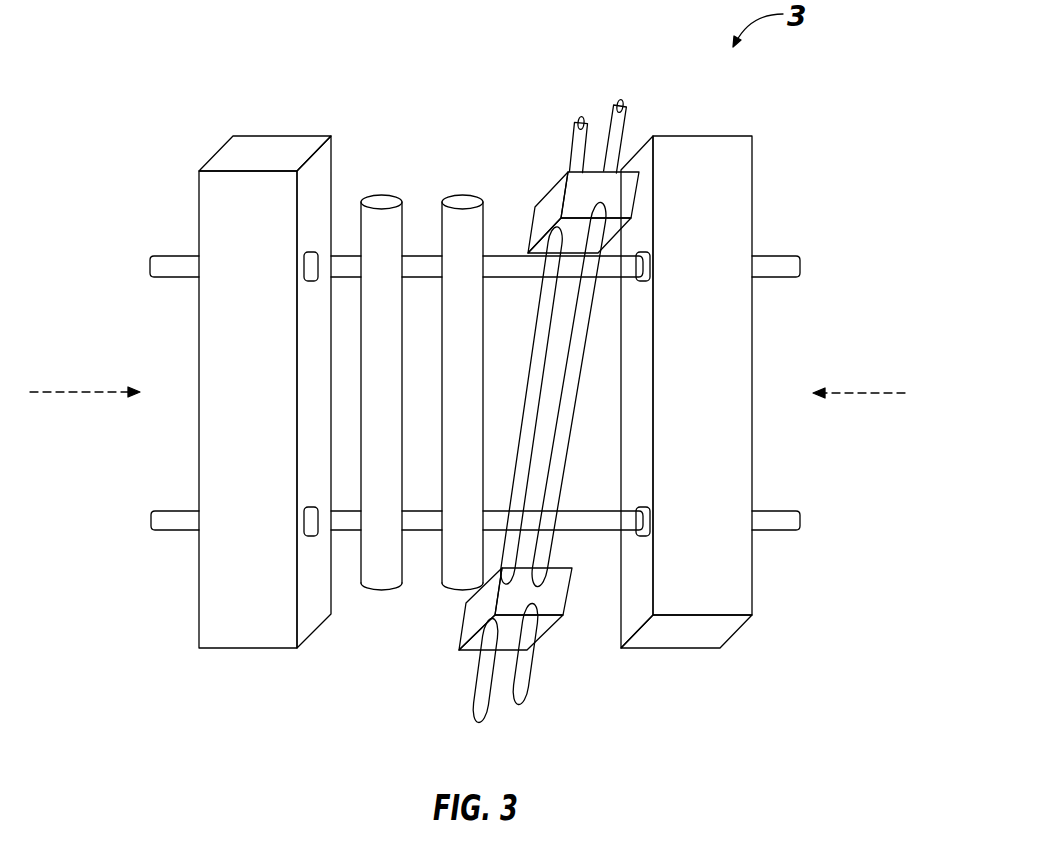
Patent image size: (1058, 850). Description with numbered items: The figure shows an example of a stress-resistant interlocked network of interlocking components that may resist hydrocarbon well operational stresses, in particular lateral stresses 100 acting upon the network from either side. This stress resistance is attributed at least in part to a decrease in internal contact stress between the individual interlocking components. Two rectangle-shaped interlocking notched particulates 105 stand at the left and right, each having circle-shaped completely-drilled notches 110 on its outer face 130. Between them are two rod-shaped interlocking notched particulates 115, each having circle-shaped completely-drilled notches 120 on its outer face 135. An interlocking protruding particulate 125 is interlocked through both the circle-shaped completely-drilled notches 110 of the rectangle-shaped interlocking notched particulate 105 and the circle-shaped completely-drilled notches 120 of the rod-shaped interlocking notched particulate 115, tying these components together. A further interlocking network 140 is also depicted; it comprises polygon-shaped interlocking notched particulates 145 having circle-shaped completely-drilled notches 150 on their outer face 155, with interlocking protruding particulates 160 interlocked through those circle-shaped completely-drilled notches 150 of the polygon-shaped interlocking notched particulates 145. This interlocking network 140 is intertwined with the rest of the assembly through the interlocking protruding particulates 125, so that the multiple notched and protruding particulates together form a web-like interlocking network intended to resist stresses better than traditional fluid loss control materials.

The lateral stresses 100 is at (80, 390).
The rectangle-shaped interlocking notched particulates 105 is at (473, 396).
The circle-shaped completely-drilled notches 110 is at (315, 534).
The rod-shaped interlocking notched particulates 115 is at (446, 387).
The circle-shaped completely-drilled notches 120 is at (360, 266).
The interlocking protruding particulate 125 is at (777, 255).
The outer face 130 is at (200, 401).
The outer face 135 is at (390, 223).
The interlocking network 140 is at (607, 427).
The polygon-shaped interlocking notched particulates 145 is at (555, 187).
The circle-shaped completely-drilled notches 150 is at (613, 232).
The outer face 155 is at (542, 252).
The interlocking protruding particulates 160 is at (537, 393).